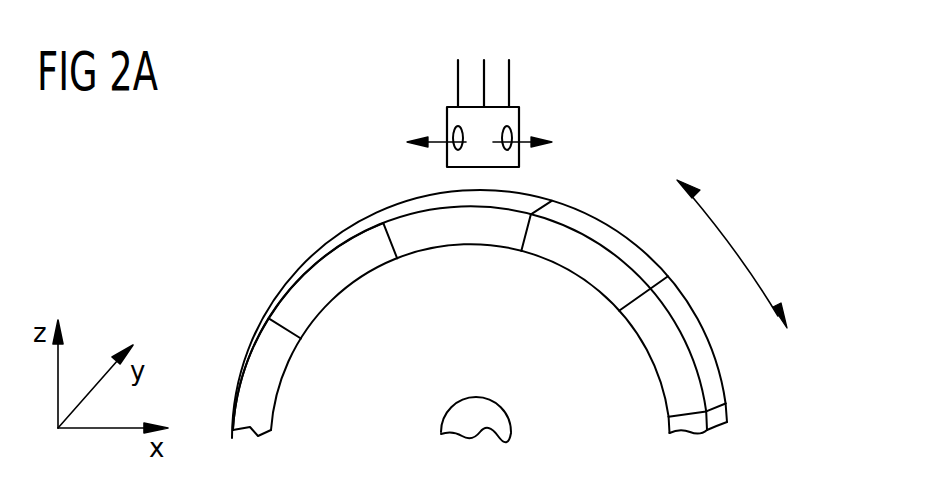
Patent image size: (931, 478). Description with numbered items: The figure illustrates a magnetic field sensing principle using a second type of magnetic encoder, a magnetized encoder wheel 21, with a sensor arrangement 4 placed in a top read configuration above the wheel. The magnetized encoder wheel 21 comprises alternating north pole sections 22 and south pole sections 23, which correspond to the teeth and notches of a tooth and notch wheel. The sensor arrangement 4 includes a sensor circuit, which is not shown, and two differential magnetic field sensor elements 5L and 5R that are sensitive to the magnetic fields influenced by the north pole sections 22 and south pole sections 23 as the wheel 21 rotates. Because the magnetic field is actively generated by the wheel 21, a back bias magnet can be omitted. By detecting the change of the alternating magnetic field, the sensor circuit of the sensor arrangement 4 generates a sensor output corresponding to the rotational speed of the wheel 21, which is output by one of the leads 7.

The sensor arrangement 4 is at (520, 112).
The leads 7 is at (513, 78).
The magnetic field sensor element 5L is at (452, 147).
The magnetic field sensor element 5R is at (515, 147).
The magnetized encoder wheel 21 is at (366, 306).
The north pole sections 22 is at (305, 286).
The south pole sections 23 is at (258, 352).